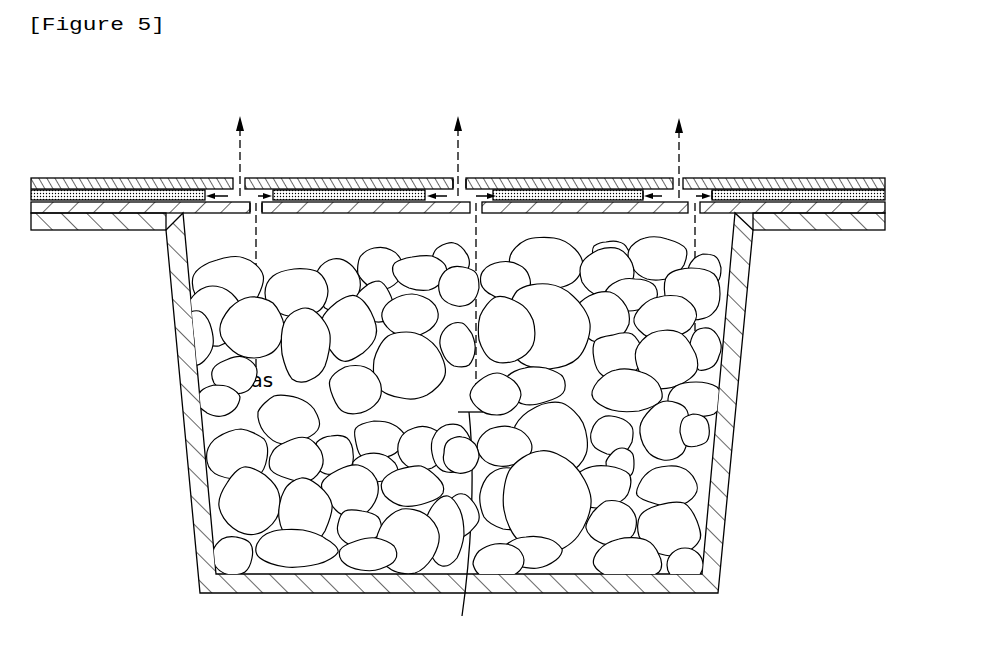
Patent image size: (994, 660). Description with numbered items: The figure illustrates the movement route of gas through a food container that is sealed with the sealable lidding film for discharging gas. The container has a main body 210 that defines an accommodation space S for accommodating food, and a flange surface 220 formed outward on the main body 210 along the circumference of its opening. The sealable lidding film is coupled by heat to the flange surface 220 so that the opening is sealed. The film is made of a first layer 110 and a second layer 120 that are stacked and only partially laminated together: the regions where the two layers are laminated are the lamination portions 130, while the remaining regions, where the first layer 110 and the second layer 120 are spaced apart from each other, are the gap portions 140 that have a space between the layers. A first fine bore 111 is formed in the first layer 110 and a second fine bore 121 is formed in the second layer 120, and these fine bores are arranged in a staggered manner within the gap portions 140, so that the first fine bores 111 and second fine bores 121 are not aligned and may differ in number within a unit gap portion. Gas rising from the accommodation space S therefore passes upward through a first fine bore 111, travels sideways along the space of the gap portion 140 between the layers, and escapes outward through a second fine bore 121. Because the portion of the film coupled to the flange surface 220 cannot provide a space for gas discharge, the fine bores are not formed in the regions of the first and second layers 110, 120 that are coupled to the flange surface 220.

The first layer 110 is at (870, 207).
The first fine bore 111 is at (262, 208).
The second layer 120 is at (887, 184).
The second fine bore 121 is at (455, 176).
The lamination portion 130 is at (98, 193).
The gap portion 140 is at (670, 192).
The main body 210 is at (200, 490).
The flange surface 220 is at (66, 231).
The accommodation space S is at (466, 528).